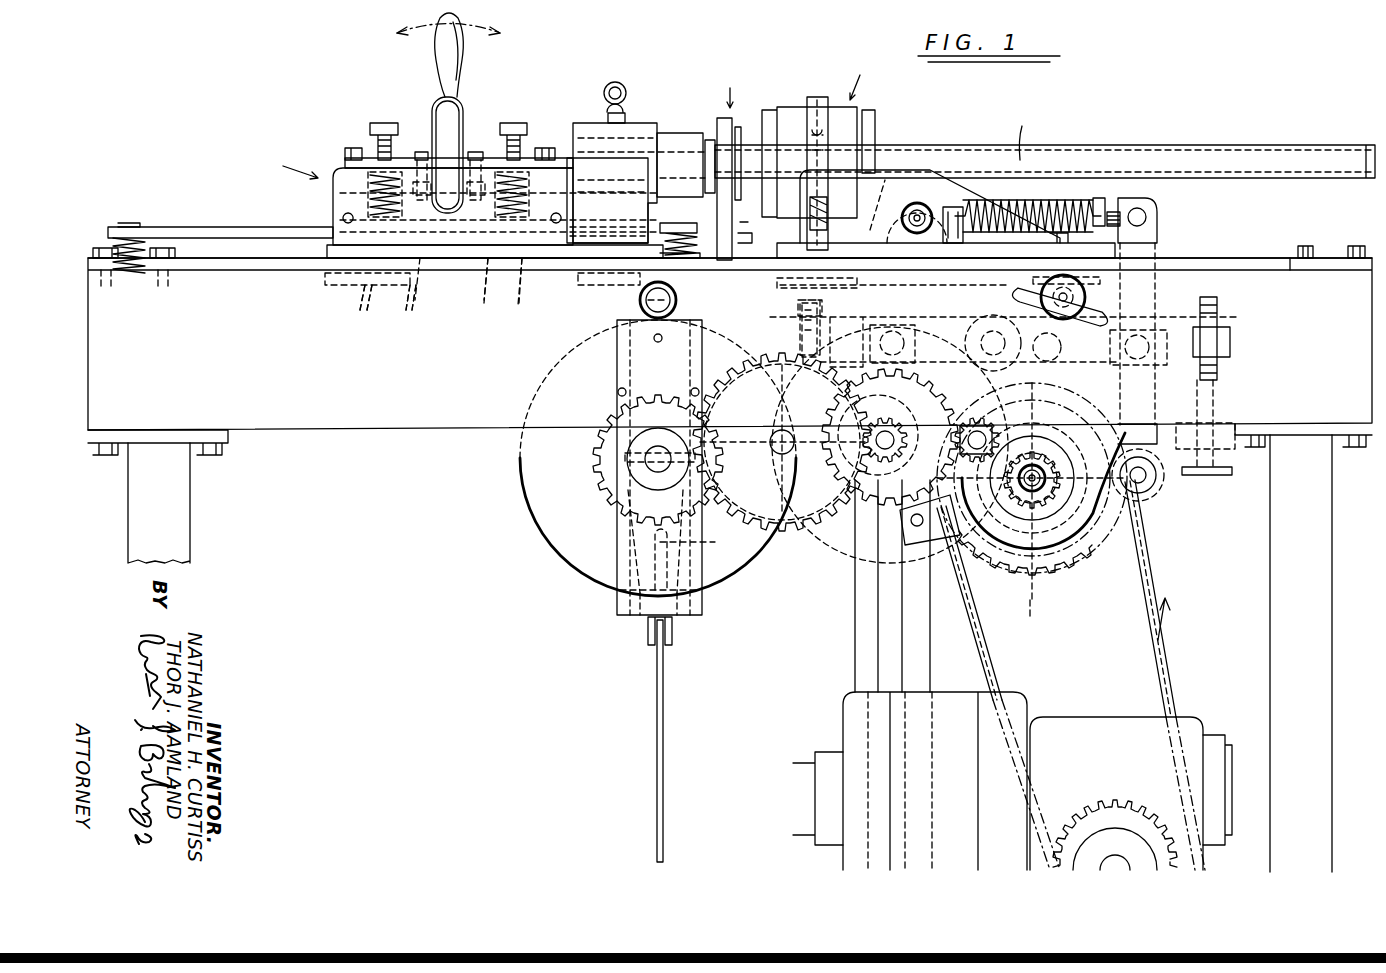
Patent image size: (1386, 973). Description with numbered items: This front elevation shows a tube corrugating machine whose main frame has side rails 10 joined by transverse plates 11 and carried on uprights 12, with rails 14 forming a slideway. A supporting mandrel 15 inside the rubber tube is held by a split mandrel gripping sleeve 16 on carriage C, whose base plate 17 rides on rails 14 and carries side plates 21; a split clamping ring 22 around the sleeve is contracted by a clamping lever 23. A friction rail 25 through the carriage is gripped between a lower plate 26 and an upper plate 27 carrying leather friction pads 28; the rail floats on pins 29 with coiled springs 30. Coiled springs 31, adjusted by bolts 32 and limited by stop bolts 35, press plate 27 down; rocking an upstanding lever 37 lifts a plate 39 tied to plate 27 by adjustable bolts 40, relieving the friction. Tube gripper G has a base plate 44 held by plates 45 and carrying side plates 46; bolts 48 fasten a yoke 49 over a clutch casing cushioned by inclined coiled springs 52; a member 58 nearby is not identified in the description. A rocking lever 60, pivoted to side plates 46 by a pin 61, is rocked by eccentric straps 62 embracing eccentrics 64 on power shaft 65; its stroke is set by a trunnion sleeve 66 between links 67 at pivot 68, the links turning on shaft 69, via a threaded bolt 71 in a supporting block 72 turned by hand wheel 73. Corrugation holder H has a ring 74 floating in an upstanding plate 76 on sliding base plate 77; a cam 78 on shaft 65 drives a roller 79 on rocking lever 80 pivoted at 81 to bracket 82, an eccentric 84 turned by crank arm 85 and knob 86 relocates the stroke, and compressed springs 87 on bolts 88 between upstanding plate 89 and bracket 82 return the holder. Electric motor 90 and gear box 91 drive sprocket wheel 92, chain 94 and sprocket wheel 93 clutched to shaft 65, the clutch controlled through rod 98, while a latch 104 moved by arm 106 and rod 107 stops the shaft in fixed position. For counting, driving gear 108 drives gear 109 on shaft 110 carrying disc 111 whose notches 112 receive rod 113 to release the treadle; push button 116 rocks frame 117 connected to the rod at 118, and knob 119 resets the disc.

The side rails 10 is at (292, 377).
The transverse plates 11 is at (128, 270).
The uprights 12 is at (190, 527).
The plates or rails 14 is at (210, 270).
The supporting mandrel 15 is at (1343, 160).
The mandrel gripping sleeve 16 is at (683, 133).
The base plate 17 is at (435, 285).
The side plates 21 is at (615, 167).
The split clamping ring 22 is at (585, 120).
The clamping lever 23 is at (614, 82).
The friction rail 25 is at (218, 240).
The lower plate 26 is at (518, 305).
The upper plate 27 is at (491, 282).
The leather friction pad 28 is at (370, 310).
The pin 29 is at (130, 224).
The coiled spring 30 is at (115, 248).
The coiled springs 31 is at (345, 212).
The bolts 32 is at (372, 125).
The adjustable stop bolts 35 is at (347, 152).
The upstanding lever 37 is at (437, 70).
The plate 39 is at (406, 311).
The adjustable bolts 40 is at (421, 152).
The base plate 44 is at (790, 243).
The transversely extending plates 45 is at (783, 288).
The side plates 46 is at (892, 170).
The bolts 48 is at (810, 118).
The yoke 49 is at (818, 96).
The inclined coiled springs 52 is at (835, 210).
The disc 58 is at (872, 120).
The rocking lever 60 is at (870, 300).
The transversely extending pin 61 is at (920, 205).
The eccentric straps 62 is at (845, 540).
The eccentrics 64 is at (1035, 612).
The power shaft 65 is at (1062, 490).
The sleeve 66 is at (900, 335).
The spaced links 67 is at (910, 320).
The pivot 68 is at (982, 340).
The shaft 69 is at (1018, 293).
The bolt 71 is at (800, 318).
The supporting block 72 is at (778, 430).
The hand adjusting wheel 73 is at (830, 505).
The tube surrounding ring 74 is at (735, 130).
The upstanding plate 76 is at (740, 222).
The sliding base plate 77 is at (705, 228).
The cam 78 is at (1038, 578).
The roller 79 is at (1152, 485).
The rocking lever 80 is at (1145, 243).
The pivot 81 is at (1140, 218).
The bracket 82 is at (1097, 196).
The eccentric 84 is at (1010, 350).
The adjusting crank arm 85 is at (1098, 360).
The adjusting knob 86 is at (1090, 290).
The compressed springs 87 is at (1050, 200).
The bolts 88 is at (1117, 210).
The upstanding plate 89 is at (960, 205).
The electric motor 90 is at (845, 725).
The speed reducing gear box 91 is at (1098, 725).
The sprocket wheel 92 is at (1098, 812).
The sprocket wheel 93 is at (1010, 560).
The sprocket chain 94 is at (1150, 560).
The rod 98 is at (925, 672).
The pivoted latch 104 is at (962, 590).
The laterally extending arm 106 is at (858, 488).
The rod 107 is at (855, 652).
The driving gear 108 is at (1075, 540).
The gear 109 is at (600, 485).
The shaft 110 is at (640, 482).
The large disc 111 is at (520, 452).
The deep notches 112 is at (670, 543).
The rod 113 is at (657, 705).
The push button 116 is at (640, 300).
The frame 117 is at (617, 315).
The connection 118 is at (672, 640).
The knob 119 is at (656, 466).